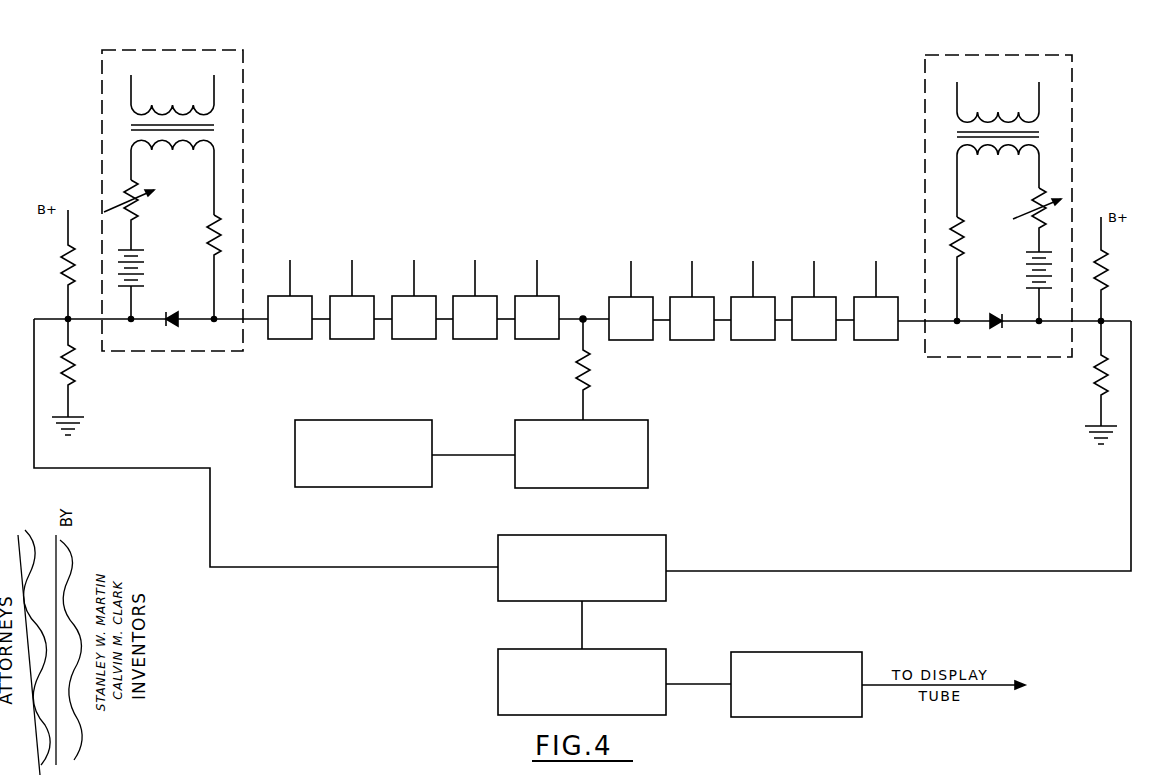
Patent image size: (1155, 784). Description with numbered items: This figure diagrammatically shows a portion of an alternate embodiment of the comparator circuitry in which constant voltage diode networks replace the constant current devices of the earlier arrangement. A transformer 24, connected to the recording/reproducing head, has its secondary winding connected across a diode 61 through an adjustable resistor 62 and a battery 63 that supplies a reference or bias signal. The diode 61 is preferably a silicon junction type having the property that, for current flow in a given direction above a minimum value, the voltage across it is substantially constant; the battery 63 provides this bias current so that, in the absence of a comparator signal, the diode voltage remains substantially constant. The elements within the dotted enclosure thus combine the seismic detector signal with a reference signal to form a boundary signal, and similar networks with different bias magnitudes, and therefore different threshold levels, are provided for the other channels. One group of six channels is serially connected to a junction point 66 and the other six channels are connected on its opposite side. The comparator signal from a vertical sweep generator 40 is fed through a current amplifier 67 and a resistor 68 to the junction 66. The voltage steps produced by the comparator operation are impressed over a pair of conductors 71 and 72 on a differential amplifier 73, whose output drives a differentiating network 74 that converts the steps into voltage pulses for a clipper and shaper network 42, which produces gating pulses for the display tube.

The transformer 24 is at (215, 128).
The adjustable resistor 62 is at (140, 203).
The battery 63 is at (135, 251).
The diode 61 is at (172, 323).
The junction point 66 is at (597, 318).
The resistor 68 is at (573, 372).
The vertical sweep generator 40 is at (367, 420).
The current amplifier 67 is at (620, 420).
The conductor 71 is at (258, 567).
The conductor 72 is at (823, 571).
The differential amplifier 73 is at (630, 535).
The differentiating network 74 is at (630, 649).
The clipper and shaper network 42 is at (798, 652).